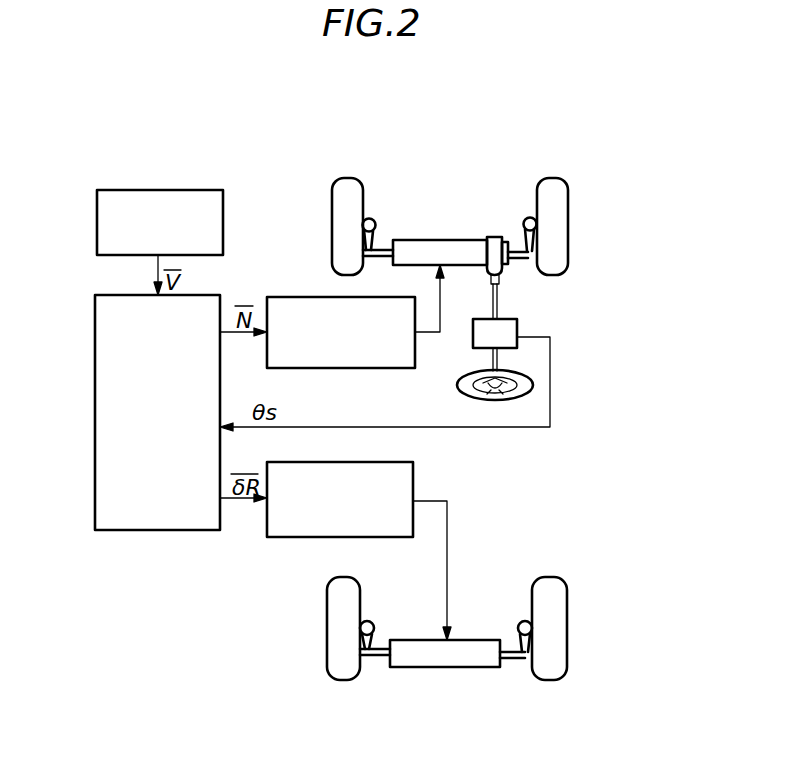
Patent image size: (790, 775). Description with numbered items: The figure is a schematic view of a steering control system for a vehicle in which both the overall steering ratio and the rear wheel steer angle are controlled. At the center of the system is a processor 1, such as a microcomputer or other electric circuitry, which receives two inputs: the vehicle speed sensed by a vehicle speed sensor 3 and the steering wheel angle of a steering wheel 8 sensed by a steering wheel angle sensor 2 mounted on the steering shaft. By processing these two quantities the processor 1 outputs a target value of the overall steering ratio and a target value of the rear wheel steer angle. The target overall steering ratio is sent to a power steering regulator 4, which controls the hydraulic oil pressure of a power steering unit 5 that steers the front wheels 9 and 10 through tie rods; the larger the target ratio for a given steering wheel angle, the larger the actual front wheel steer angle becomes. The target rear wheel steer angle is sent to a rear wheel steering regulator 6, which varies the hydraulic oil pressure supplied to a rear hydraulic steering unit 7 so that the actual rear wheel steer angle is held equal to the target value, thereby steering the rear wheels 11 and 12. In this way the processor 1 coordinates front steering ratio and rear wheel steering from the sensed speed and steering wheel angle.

The processor 1 is at (95, 462).
The steering wheel angle sensor 2 is at (514, 319).
The vehicle speed sensor 3 is at (176, 190).
The power steering regulator 4 is at (309, 297).
The power steering unit 5 is at (410, 240).
The rear wheel steering regulator 6 is at (307, 538).
The rear hydraulic steering unit 7 is at (437, 667).
The steering wheel 8 is at (458, 390).
The front wheel 9 is at (332, 208).
The front wheel 10 is at (568, 222).
The rear wheel 11 is at (327, 652).
The rear wheel 12 is at (568, 628).